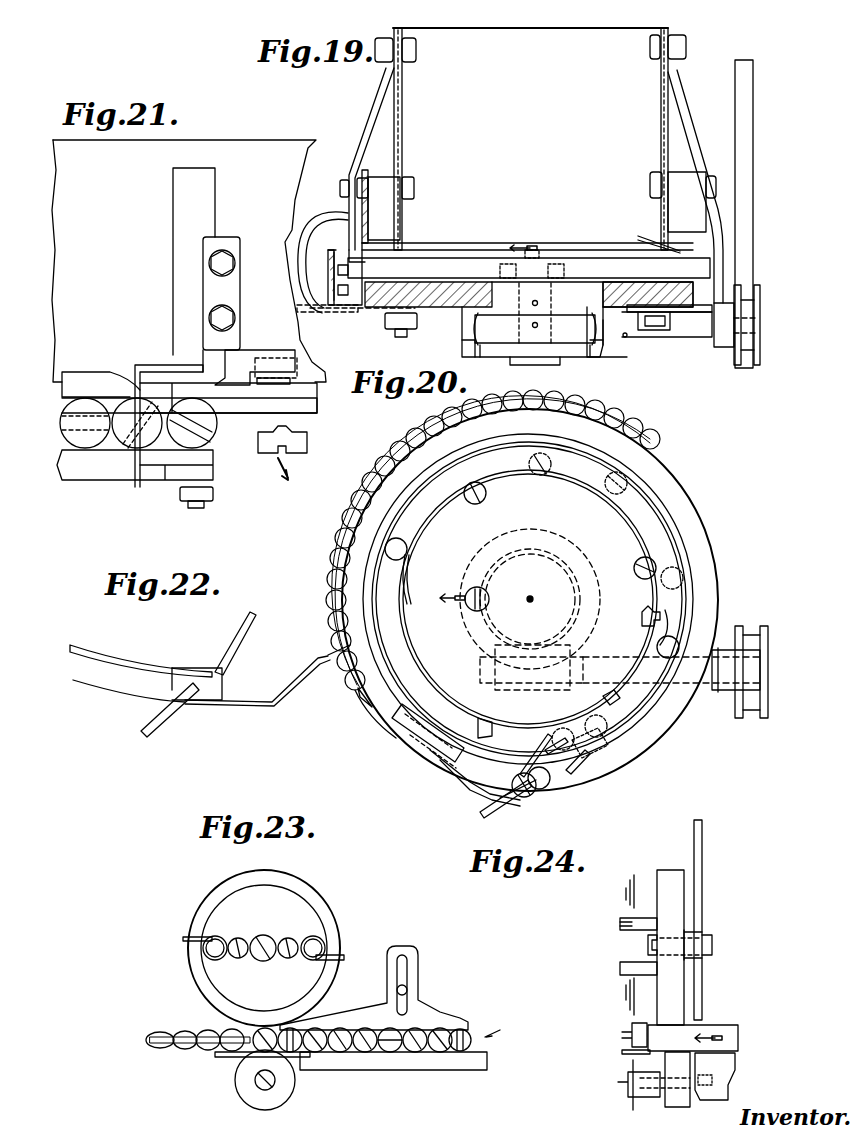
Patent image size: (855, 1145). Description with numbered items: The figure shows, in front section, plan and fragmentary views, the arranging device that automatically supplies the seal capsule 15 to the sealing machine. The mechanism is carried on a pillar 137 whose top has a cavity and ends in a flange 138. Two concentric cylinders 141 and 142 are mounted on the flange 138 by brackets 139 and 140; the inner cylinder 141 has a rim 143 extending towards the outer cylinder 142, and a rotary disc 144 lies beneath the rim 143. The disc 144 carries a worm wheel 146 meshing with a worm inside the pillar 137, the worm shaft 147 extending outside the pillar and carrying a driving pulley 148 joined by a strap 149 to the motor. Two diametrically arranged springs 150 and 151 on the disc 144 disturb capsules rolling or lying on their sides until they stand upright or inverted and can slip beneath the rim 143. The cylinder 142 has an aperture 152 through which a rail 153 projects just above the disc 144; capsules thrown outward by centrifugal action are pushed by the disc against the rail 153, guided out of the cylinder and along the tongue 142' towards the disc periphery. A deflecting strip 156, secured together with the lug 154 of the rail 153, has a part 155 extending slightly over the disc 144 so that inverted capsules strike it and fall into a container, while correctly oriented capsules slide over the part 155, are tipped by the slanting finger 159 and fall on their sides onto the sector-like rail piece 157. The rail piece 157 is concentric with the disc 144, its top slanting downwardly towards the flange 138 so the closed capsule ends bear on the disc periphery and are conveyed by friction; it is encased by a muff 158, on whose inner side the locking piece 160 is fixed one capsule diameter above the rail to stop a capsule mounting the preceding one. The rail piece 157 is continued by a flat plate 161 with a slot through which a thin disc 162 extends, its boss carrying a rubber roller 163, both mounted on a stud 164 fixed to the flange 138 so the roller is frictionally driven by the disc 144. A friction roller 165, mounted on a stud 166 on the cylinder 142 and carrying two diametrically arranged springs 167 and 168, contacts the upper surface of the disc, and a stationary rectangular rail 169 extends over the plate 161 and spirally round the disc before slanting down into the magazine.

In FIG. 21, the capsule 15 is at (307, 448).
In FIG. 19, the pillar 137 is at (636, 330).
In FIG. 19, the flange 138 is at (405, 298).
In FIG. 24, the flange 138 is at (728, 1062).
In FIG. 19, the bracket 139 is at (372, 120).
In FIG. 19, the bracket 140 is at (678, 96).
In FIG. 19, the cylinder 141 is at (663, 112).
In FIG. 20, the cylinder 141 is at (628, 505).
In FIG. 19, the cylinder 142 is at (345, 265).
In FIG. 21, the cylinder 142 is at (189, 261).
In FIG. 22, the cylinder 142 is at (141, 657).
In FIG. 24, the cylinder 142 is at (722, 920).
In FIG. 19, the tongue 142' is at (356, 326).
In FIG. 22, the tongue 142' is at (263, 684).
In FIG. 20, the tongue 142' is at (482, 723).
In FIG. 19, the rim 143 is at (386, 240).
In FIG. 19, the rotary disc 144 is at (586, 242).
In FIG. 21, the rotary disc 144 is at (312, 405).
In FIG. 20, the rotary disc 144 is at (697, 510).
In FIG. 24, the rotary disc 144 is at (712, 1025).
In FIG. 19, the worm wheel 146 is at (658, 328).
In FIG. 19, the shaft 147 is at (672, 330).
In FIG. 20, the shaft 147 is at (712, 690).
In FIG. 19, the driving pulley 148 is at (741, 355).
In FIG. 20, the driving pulley 148 is at (748, 716).
In FIG. 19, the strap 149 is at (738, 110).
In FIG. 20, the spring 150 is at (410, 580).
In FIG. 19, the spring 151 is at (646, 238).
In FIG. 20, the spring 151 is at (655, 615).
In FIG. 21, the aperture 152 is at (245, 356).
In FIG. 20, the aperture 152 is at (584, 724).
In FIG. 21, the rail 153 is at (240, 395).
In FIG. 22, the rail 153 is at (245, 640).
In FIG. 20, the rail 153 is at (540, 738).
In FIG. 21, the lug 154 is at (235, 298).
In FIG. 21, the part 155 is at (170, 380).
In FIG. 22, the part 155 is at (205, 695).
In FIG. 21, the strip 156 is at (185, 285).
In FIG. 19, the rail piece 157 is at (388, 322).
In FIG. 21, the rail piece 157 is at (207, 458).
In FIG. 23, the rail piece 157 is at (395, 1072).
In FIG. 19, the muff 158 is at (330, 268).
In FIG. 20, the muff 158 is at (390, 730).
In FIG. 21, the finger 159 is at (137, 366).
In FIG. 22, the finger 159 is at (145, 730).
In FIG. 20, the finger 159 is at (490, 800).
In FIG. 21, the locking piece 160 is at (78, 372).
In FIG. 23, the locking piece 160 is at (372, 1015).
In FIG. 23, the flat plate 161 is at (220, 1060).
In FIG. 23, the thin disc 162 is at (288, 1084).
In FIG. 24, the thin disc 162 is at (630, 1058).
In FIG. 24, the rubber roller 163 is at (672, 1090).
In FIG. 24, the stud 164 is at (635, 1098).
In FIG. 20, the friction roller 165 is at (428, 770).
In FIG. 23, the friction roller 165 is at (300, 888).
In FIG. 23, the stud 166 is at (265, 960).
In FIG. 24, the stud 166 is at (712, 942).
In FIG. 23, the spring 167 is at (186, 930).
In FIG. 24, the spring 167 is at (625, 905).
In FIG. 23, the spring 168 is at (343, 957).
In FIG. 24, the spring 168 is at (625, 988).
In FIG. 20, the rectangular rail 169 is at (668, 430).